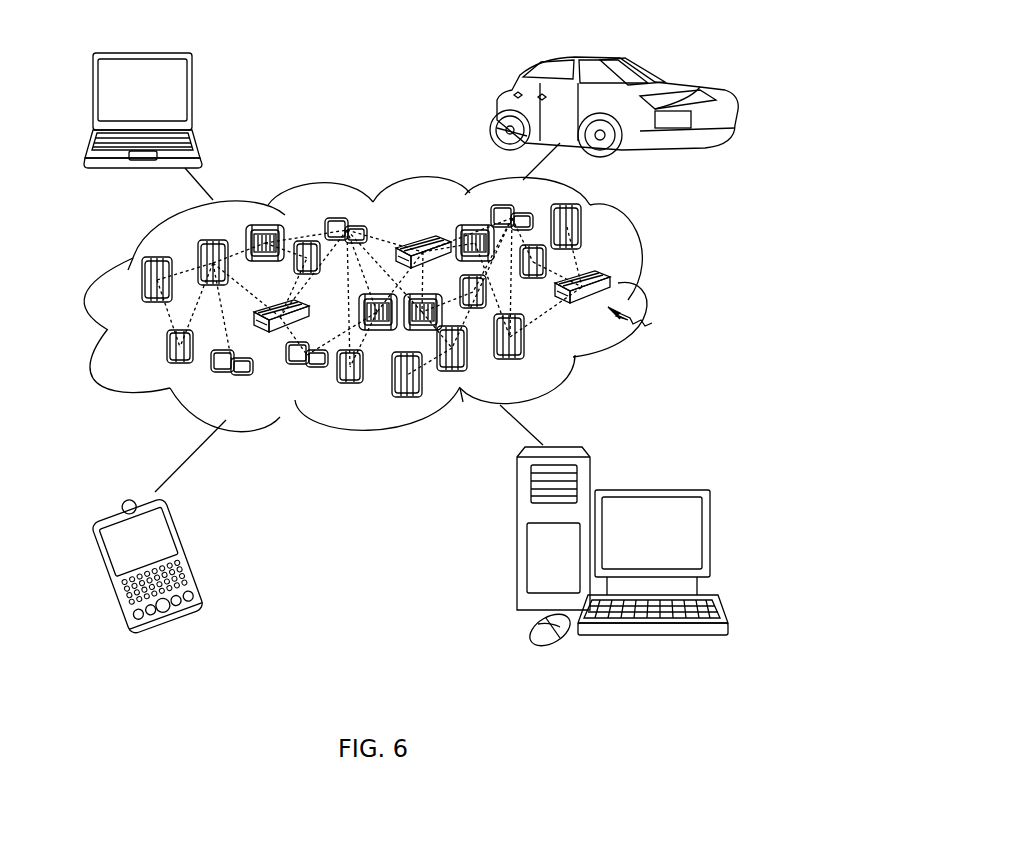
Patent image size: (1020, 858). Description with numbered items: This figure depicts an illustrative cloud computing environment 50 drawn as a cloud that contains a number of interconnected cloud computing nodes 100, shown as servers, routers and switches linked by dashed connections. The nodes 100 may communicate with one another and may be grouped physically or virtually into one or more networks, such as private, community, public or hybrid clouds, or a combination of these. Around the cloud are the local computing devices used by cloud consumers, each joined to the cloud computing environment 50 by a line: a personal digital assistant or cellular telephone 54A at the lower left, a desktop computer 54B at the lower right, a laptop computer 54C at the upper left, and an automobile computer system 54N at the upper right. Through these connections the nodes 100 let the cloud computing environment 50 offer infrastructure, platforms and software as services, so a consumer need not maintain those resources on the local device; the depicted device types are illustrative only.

The cloud computing environment 50 is at (652, 288).
The cloud computing nodes 100 is at (646, 324).
The personal digital assistant or cellular telephone 54A is at (188, 554).
The desktop computer 54B is at (650, 486).
The laptop computer 54C is at (195, 96).
The automobile computer system 54N is at (497, 106).